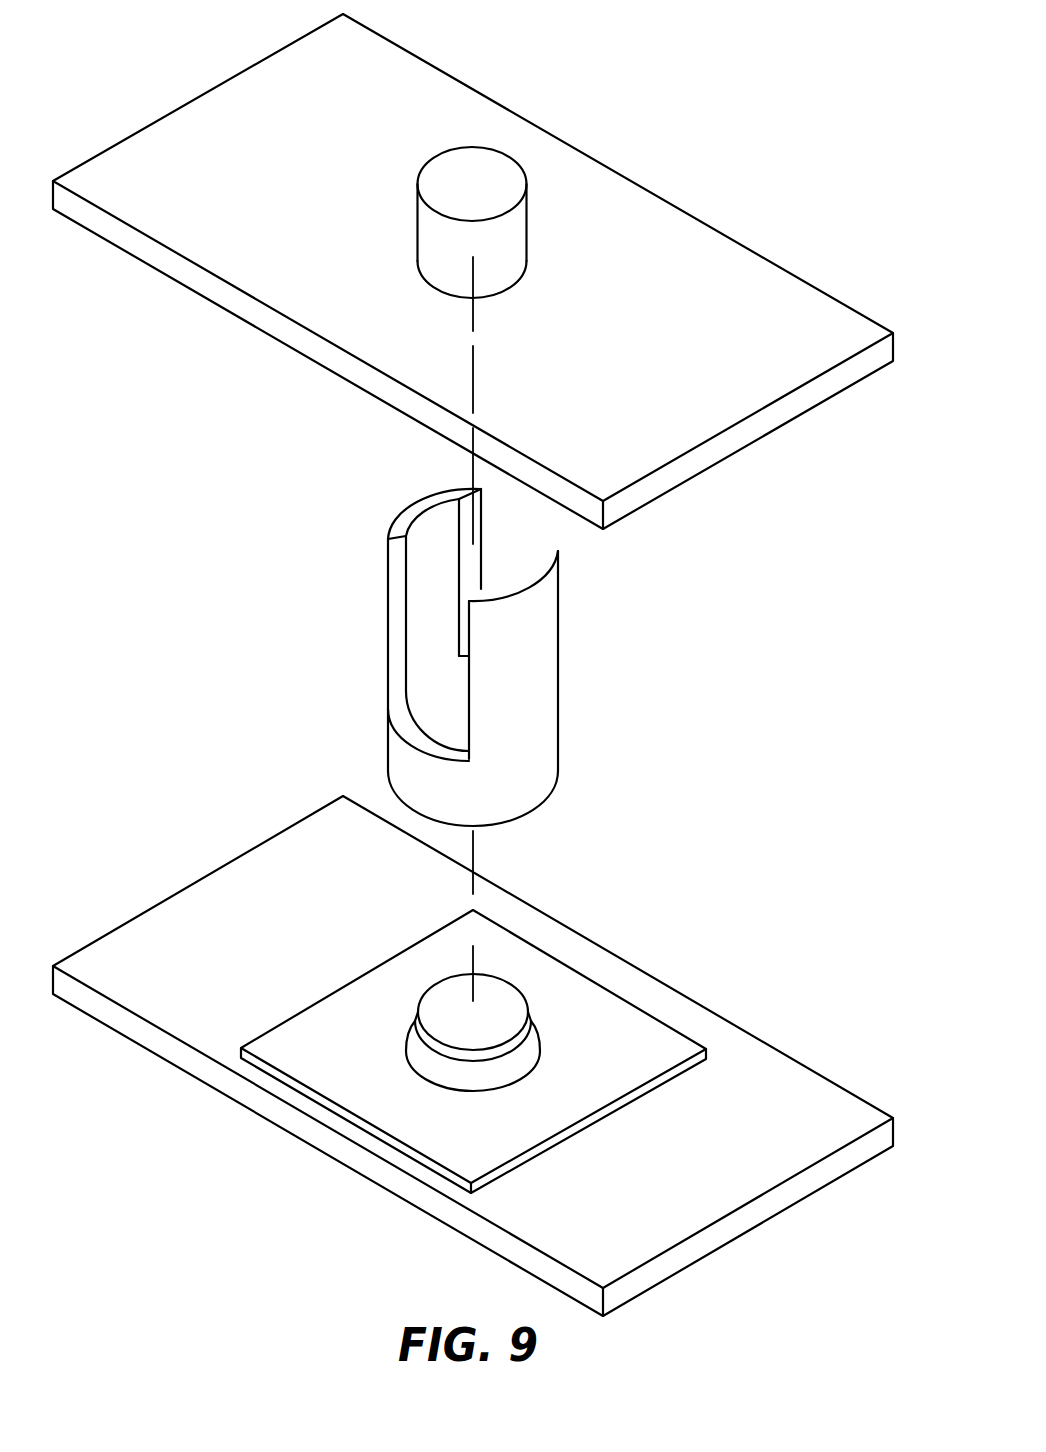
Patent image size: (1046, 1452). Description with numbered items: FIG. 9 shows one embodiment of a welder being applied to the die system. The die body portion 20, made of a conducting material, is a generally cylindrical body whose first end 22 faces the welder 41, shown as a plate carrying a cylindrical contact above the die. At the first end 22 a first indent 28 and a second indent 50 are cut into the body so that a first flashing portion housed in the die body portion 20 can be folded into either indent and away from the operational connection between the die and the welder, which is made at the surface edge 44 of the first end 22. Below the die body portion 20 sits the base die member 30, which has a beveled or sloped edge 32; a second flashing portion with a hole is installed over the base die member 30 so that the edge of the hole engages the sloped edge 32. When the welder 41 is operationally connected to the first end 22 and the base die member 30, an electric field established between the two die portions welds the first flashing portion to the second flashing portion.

The die body portion 20 is at (458, 622).
The first end 22 is at (493, 550).
The first indent 28 is at (427, 632).
The base die member 30 is at (397, 1077).
The sloped edge 32 is at (527, 1028).
The welder 41 is at (755, 426).
The surface edge 44 is at (413, 510).
The second indent 50 is at (485, 560).